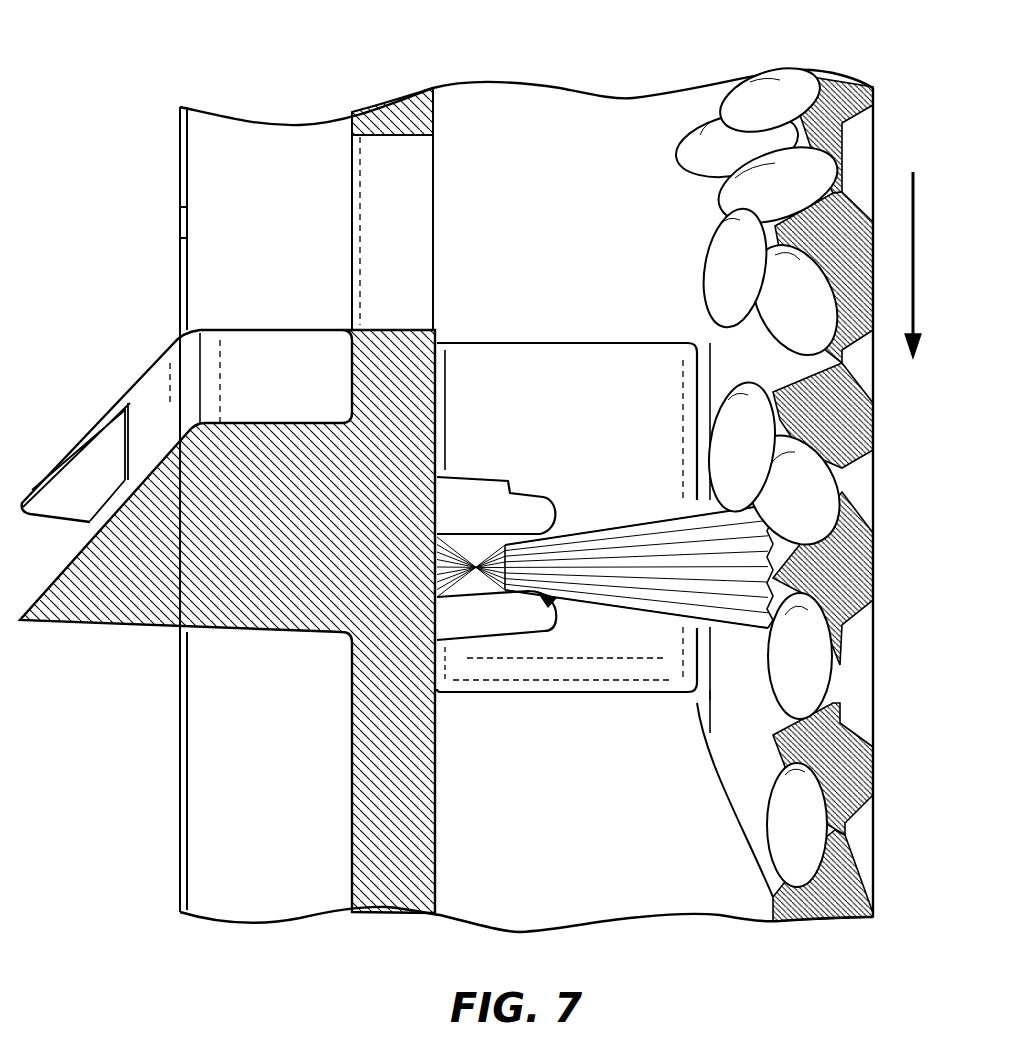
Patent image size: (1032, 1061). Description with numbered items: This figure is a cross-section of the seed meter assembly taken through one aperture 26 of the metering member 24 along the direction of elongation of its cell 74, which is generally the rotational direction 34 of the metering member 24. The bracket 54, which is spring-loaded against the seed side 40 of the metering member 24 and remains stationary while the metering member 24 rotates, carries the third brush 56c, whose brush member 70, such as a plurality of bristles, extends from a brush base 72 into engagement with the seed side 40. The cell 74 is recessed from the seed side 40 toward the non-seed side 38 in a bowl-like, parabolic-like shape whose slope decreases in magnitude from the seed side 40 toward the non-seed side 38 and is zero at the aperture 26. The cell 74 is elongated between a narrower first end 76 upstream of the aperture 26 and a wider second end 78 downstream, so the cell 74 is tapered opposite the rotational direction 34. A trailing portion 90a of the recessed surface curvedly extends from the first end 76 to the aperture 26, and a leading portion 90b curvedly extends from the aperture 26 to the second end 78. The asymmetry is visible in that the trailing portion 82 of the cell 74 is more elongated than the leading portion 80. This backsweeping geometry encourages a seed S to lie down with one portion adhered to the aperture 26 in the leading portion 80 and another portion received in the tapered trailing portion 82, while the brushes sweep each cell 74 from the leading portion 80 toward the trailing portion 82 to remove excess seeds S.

The metering member 24 is at (832, 85).
The rotational direction 34 is at (903, 247).
The aperture 26 is at (842, 320).
The cell 74 is at (772, 247).
The brush base 72 is at (477, 503).
The third brush 56c is at (563, 503).
The brush member 70 is at (620, 547).
The first end 76 is at (770, 570).
The trailing portion 82 is at (787, 583).
The leading portion of the recessed surface 90b is at (725, 649).
The leading portion 80 is at (785, 730).
The trailing portion of the recessed surface 90a is at (710, 699).
The second end 78 is at (768, 738).
The bracket 54 is at (377, 773).
The seed S is at (763, 840).
The seed side 40 is at (773, 912).
The non-seed side 38 is at (877, 773).